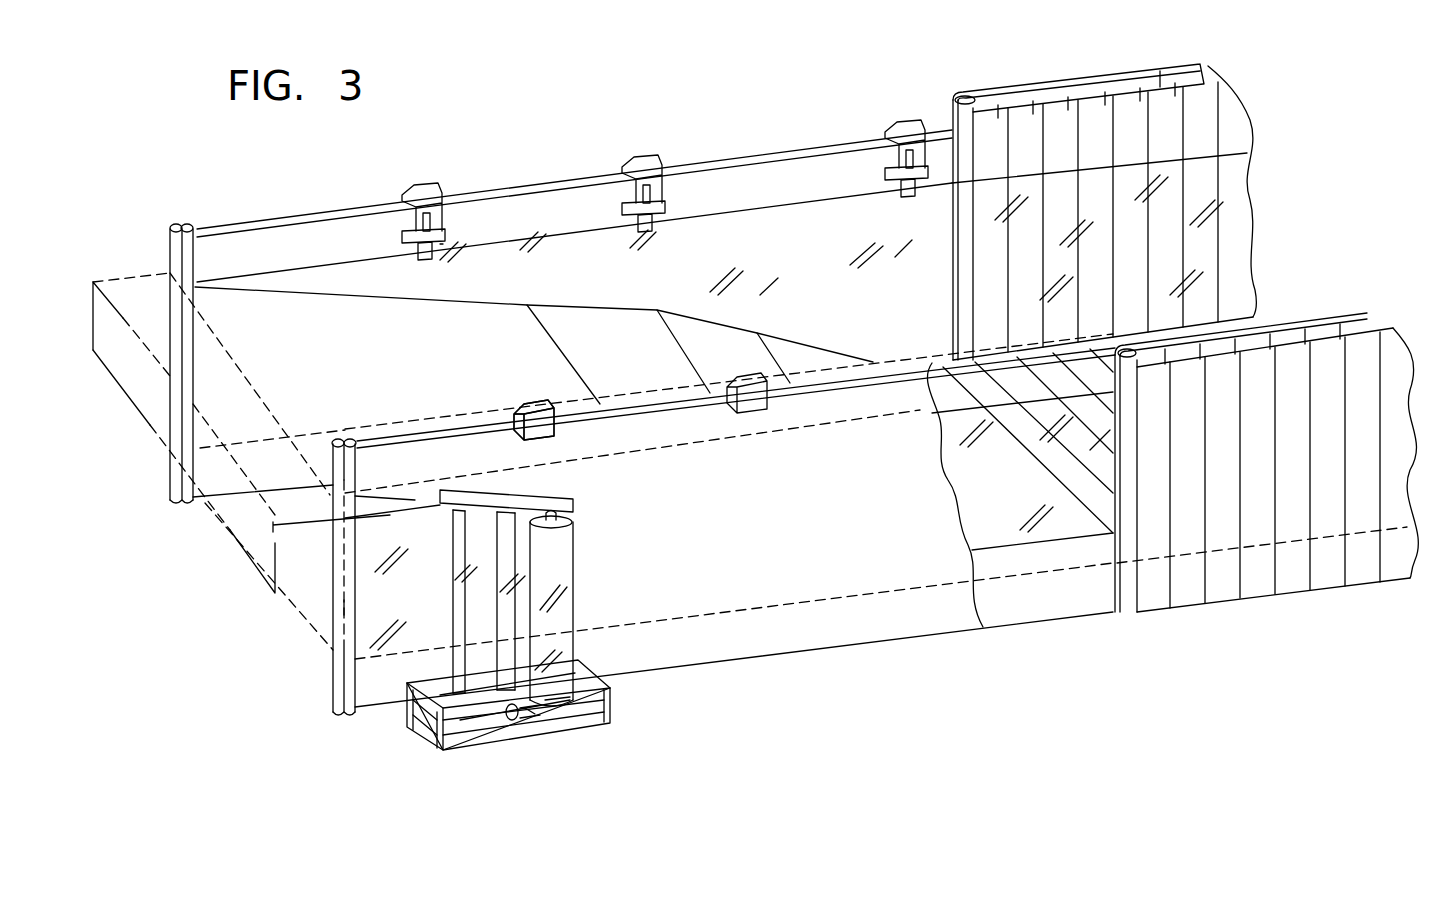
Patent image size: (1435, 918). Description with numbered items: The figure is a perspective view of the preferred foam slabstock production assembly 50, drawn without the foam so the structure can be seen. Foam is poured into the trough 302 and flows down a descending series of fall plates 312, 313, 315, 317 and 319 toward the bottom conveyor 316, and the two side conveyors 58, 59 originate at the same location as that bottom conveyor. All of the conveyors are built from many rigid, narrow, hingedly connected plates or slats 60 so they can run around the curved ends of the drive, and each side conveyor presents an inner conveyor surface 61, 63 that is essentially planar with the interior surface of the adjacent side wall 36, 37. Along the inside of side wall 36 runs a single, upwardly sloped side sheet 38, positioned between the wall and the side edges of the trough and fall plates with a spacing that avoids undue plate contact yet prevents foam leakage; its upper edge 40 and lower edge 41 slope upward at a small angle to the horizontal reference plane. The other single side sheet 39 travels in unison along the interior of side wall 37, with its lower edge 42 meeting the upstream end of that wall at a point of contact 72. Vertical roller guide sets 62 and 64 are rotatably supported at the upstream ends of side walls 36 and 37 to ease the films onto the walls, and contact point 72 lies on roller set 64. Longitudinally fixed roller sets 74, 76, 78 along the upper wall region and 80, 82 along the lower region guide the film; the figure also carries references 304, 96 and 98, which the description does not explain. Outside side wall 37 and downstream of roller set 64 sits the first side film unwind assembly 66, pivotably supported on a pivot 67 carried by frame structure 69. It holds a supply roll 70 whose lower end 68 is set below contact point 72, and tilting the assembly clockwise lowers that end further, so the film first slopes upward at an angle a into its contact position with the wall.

The trough 302 is at (128, 378).
The vertical roller guide set 62 is at (162, 218).
The vertical roller guide set 64 is at (318, 718).
The foam slabstock production assembly 50 is at (748, 136).
The upper edge of side sheet 40 is at (458, 232).
The rail segment 304 is at (700, 196).
The single side sheet 38 is at (787, 275).
The side wall 36 is at (859, 193).
The lower edge of side sheet 41 is at (187, 494).
The fall plate 312 is at (444, 375).
The fall plate 313 is at (642, 369).
The fall plate 315 is at (744, 359).
The fall plate 317 is at (806, 356).
The lower edge of sheet 42 is at (387, 677).
The roller set 74 is at (420, 180).
The clamp flange 96 is at (436, 192).
The roller set 76 is at (652, 158).
The roller set 78 is at (905, 128).
The lower clamp 98 is at (512, 420).
The roller set 80 is at (552, 428).
The roller set 82 is at (770, 408).
The side conveyor 58 is at (1068, 70).
The plates or slats 60 is at (1160, 64).
The inner conveyor surface 61 is at (1190, 162).
The side conveyor 59 is at (1372, 312).
The inner conveyor surface 63 is at (1350, 296).
The single side sheet 39 is at (1016, 501).
The bottom conveyor 316 is at (1080, 500).
The fall plate 319 is at (1035, 540).
The side wall 37 is at (420, 508).
The film approach angle α a is at (384, 512).
The side film unwind assembly 66 is at (534, 486).
The supply roll 70 is at (575, 600).
The lower end of supply roll 68 is at (606, 708).
The pivot 67 is at (530, 722).
The frame structure 69 is at (610, 732).
The point of contact 72 is at (355, 668).